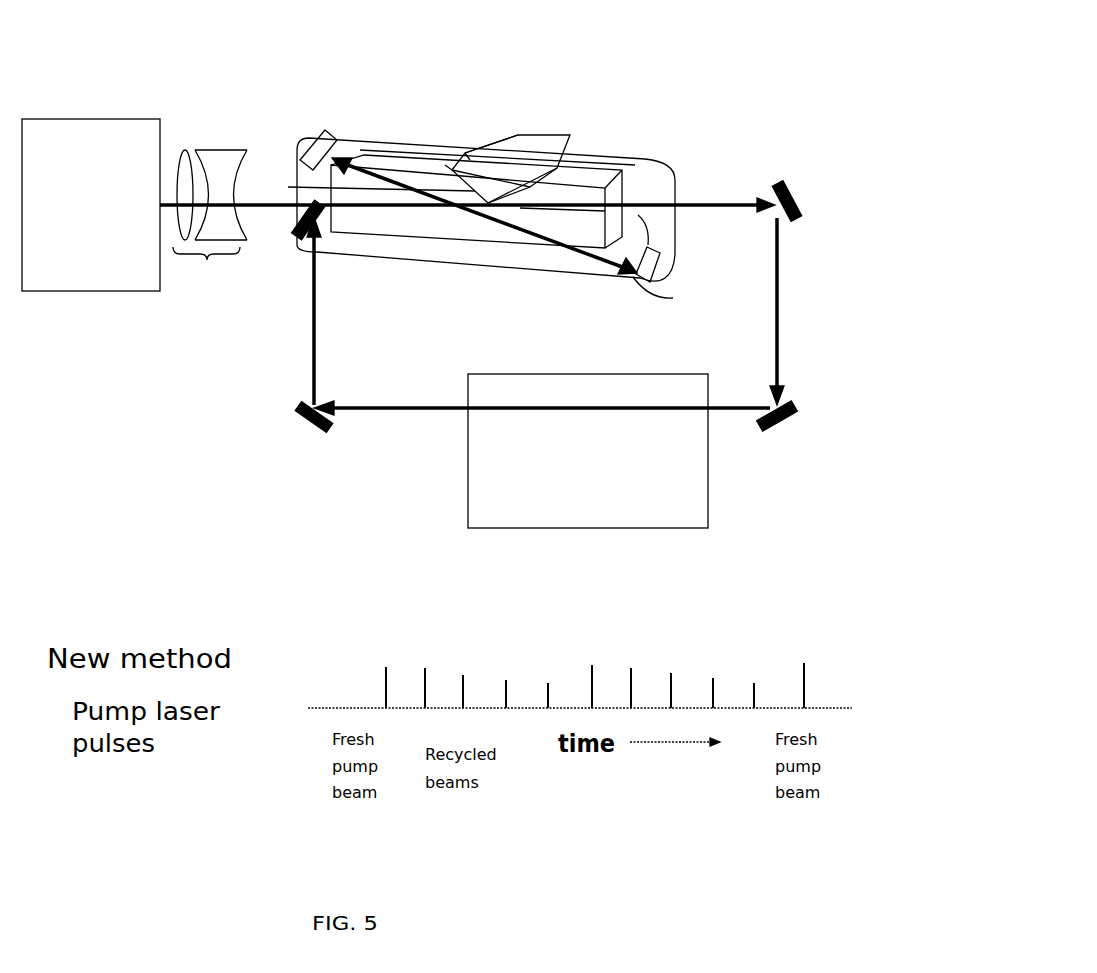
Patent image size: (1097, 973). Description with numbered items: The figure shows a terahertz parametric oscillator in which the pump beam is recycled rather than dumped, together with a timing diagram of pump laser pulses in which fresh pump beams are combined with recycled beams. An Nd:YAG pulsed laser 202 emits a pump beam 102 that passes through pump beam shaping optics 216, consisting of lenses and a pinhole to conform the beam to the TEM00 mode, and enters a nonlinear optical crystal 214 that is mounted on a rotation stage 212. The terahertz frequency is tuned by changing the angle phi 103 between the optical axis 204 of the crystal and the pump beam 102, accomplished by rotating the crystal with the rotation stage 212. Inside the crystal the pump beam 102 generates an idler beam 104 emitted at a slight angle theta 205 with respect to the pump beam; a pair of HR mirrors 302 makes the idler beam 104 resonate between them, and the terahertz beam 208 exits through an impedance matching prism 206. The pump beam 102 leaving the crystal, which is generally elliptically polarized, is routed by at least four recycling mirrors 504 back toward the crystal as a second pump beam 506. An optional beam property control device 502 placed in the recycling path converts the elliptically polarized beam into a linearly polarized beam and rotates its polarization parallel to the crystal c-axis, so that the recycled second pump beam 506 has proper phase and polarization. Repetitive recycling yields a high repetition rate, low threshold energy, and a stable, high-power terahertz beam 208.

The pump beam 102 is at (661, 205).
The angle phi 103 is at (270, 190).
The idler beam 104 is at (537, 210).
The Nd:YAG pulsed laser 202 is at (67, 213).
The optical axis 204 is at (281, 190).
The angle theta 205 is at (666, 238).
The impedance matching prism 206 is at (428, 165).
The terahertz beam 208 is at (537, 130).
The rotation stage 212 is at (640, 167).
The nonlinear optical crystal 214 is at (390, 238).
The beam shaping optics 216 is at (245, 492).
The HR mirror 302 is at (338, 140).
The beam property control device 502 is at (512, 492).
The recycling mirror 504 is at (792, 235).
The second pump beam 506 is at (770, 358).